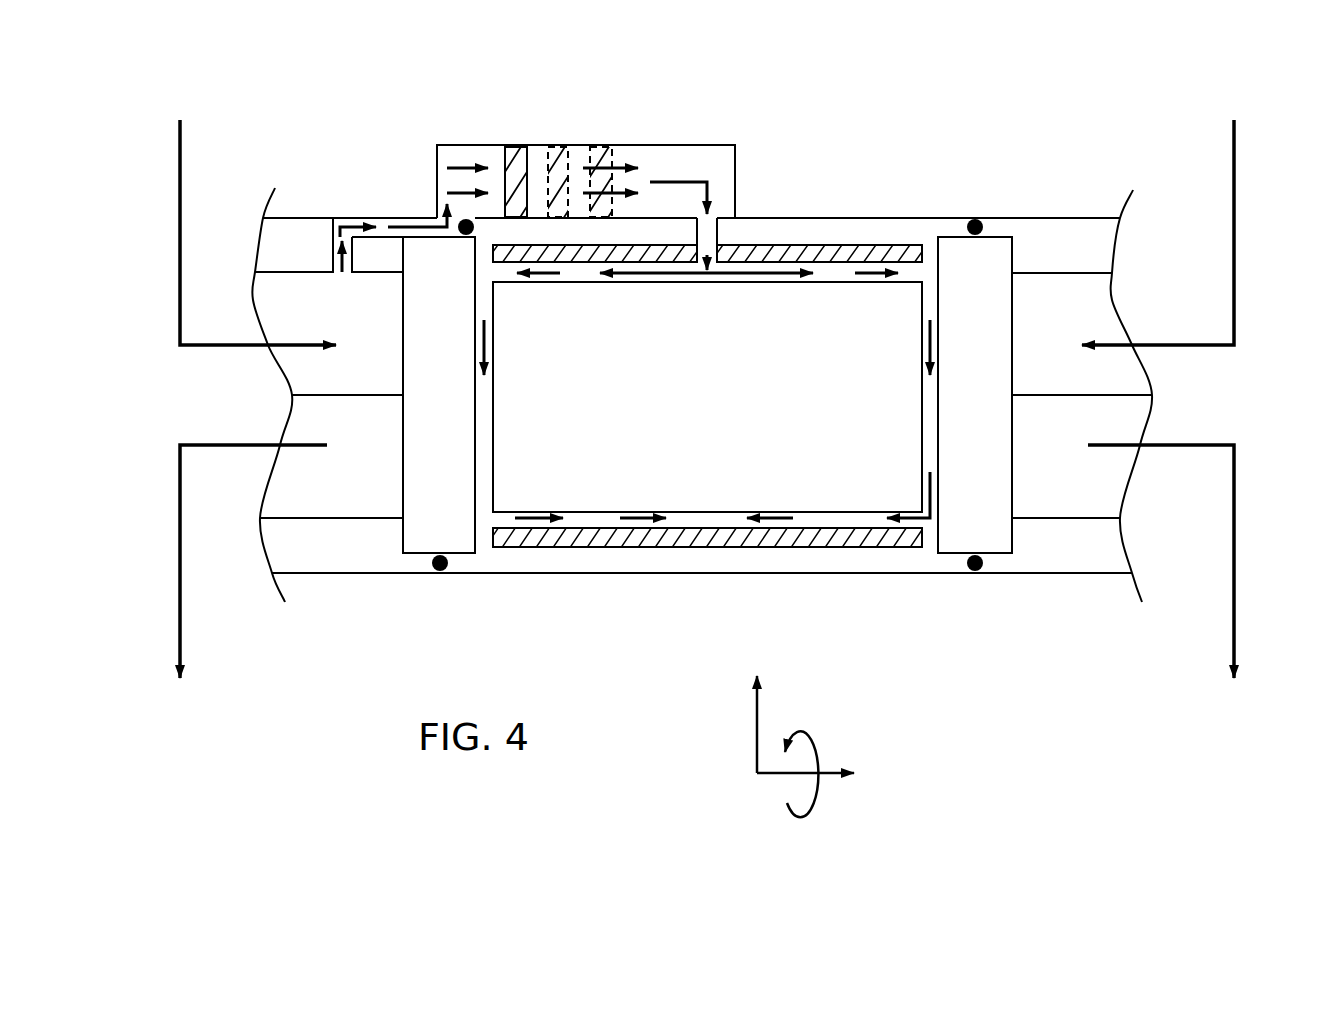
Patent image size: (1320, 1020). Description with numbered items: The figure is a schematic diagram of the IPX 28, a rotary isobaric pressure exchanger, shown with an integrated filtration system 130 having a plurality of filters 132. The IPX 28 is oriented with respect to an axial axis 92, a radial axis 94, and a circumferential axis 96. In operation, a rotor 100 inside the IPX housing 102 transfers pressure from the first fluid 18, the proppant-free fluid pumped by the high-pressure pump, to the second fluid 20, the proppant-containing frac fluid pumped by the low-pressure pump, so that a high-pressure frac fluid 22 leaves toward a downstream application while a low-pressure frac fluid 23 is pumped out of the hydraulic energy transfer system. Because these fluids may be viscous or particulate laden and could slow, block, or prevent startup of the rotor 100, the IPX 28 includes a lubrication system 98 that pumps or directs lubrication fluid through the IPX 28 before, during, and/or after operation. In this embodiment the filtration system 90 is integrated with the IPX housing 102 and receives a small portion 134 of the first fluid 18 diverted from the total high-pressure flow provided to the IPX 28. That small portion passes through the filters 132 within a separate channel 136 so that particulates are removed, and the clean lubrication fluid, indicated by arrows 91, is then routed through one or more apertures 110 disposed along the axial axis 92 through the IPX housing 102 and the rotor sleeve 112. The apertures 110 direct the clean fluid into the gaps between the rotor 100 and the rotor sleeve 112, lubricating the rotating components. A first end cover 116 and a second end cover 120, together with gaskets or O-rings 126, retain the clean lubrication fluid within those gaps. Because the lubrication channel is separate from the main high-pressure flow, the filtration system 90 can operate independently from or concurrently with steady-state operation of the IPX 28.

The first fluid 18 is at (180, 232).
The second fluid 20 is at (1234, 238).
The high-pressure frac fluid 22 is at (1234, 560).
The low-pressure frac fluid 23 is at (180, 557).
The IPX 28 is at (984, 97).
The filtration system 90 is at (512, 124).
The arrows 91 is at (488, 340).
The axial axis 92 is at (778, 775).
The radial axis 94 is at (757, 725).
The circumferential axis 96 is at (815, 740).
The lubrication system 98 is at (693, 160).
The rotor 100 is at (712, 375).
The IPX housing 102 is at (1063, 215).
The apertures 110 is at (726, 236).
The rotor sleeve 112 is at (835, 255).
The first end cover 116 is at (437, 515).
The second end cover 120 is at (982, 513).
The O-rings 126 is at (458, 232).
The integrated filtration system 130 is at (556, 140).
The filters 132 is at (627, 147).
The small portion of the first fluid 134 is at (352, 225).
The separate channel 136 is at (653, 160).